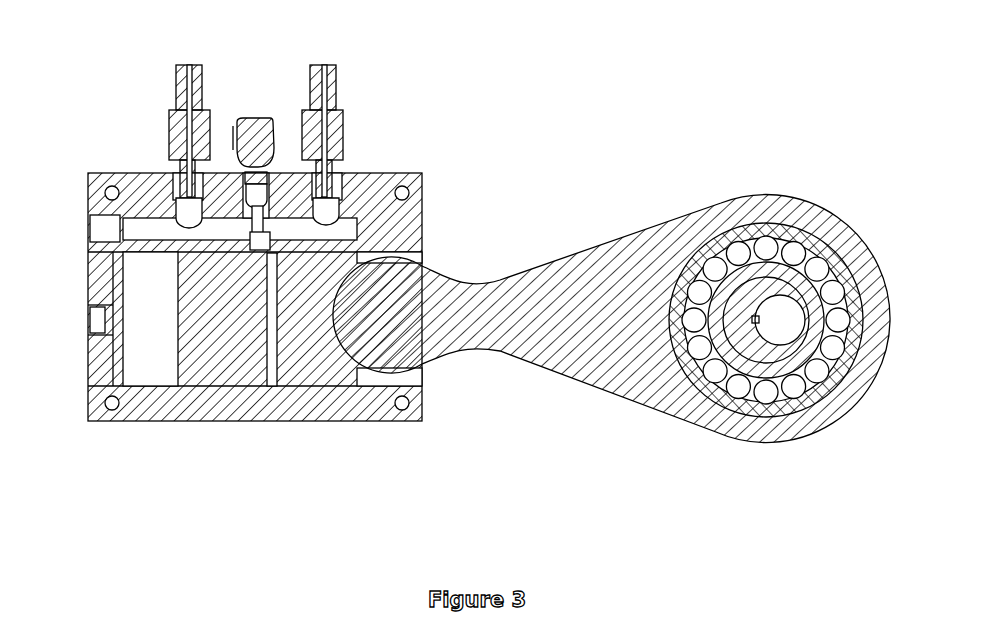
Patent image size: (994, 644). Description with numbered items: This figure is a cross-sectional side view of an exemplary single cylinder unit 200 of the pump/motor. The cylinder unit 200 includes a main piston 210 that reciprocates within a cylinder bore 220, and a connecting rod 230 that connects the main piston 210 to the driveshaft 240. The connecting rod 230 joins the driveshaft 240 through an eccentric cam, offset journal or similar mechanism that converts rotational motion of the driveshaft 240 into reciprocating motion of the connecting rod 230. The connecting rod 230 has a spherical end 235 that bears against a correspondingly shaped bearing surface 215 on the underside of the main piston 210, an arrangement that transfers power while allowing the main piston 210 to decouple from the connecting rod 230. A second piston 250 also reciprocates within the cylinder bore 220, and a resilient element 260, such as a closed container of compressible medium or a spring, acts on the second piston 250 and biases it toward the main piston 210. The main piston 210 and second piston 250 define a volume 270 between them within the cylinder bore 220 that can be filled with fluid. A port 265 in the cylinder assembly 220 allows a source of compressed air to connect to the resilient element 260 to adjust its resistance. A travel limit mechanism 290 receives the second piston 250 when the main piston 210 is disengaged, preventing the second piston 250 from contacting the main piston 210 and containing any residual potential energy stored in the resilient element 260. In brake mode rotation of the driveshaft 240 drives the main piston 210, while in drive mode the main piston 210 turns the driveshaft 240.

The cylinder unit 200 is at (468, 60).
The main piston 210 is at (333, 370).
The bearing surface 215 is at (357, 373).
The cylinder bore 220 is at (220, 333).
The connecting rod 230 is at (634, 313).
The spherical end 235 is at (435, 279).
The driveshaft 240 is at (783, 316).
The second piston 250 is at (210, 370).
The resilient element 260 is at (142, 375).
The port 265 is at (93, 323).
The volume 270 is at (277, 370).
The travel limit mechanism 290 is at (252, 237).